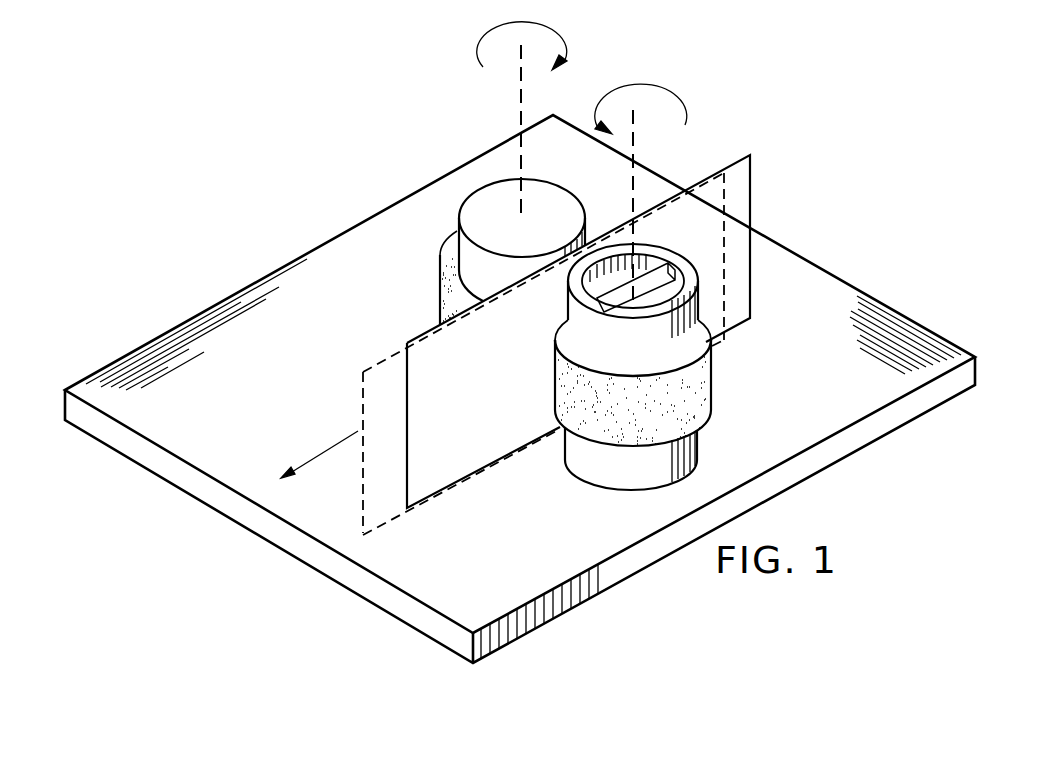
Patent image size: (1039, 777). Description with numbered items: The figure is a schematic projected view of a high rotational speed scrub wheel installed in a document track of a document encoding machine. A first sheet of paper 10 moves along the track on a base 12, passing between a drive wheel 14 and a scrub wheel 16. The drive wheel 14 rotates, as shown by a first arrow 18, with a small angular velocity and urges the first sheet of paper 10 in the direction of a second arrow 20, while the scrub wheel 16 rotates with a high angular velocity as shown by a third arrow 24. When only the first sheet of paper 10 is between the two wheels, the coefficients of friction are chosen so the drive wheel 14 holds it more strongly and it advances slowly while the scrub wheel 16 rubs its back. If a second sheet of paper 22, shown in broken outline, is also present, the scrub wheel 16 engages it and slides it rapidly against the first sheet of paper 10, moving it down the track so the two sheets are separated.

The first sheet of paper 10 is at (752, 192).
The base 12 is at (964, 377).
The drive wheel 14 is at (472, 213).
The scrub wheel 16 is at (707, 387).
The first arrow 18 is at (481, 33).
The second arrow 20 is at (338, 440).
The second sheet of paper 22 is at (378, 367).
The third arrow 24 is at (645, 88).